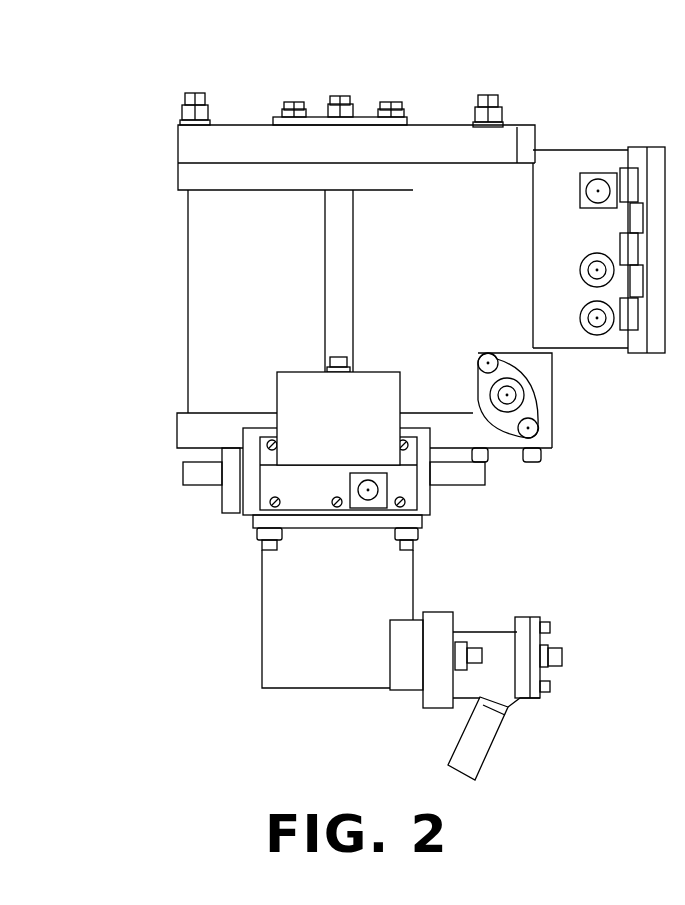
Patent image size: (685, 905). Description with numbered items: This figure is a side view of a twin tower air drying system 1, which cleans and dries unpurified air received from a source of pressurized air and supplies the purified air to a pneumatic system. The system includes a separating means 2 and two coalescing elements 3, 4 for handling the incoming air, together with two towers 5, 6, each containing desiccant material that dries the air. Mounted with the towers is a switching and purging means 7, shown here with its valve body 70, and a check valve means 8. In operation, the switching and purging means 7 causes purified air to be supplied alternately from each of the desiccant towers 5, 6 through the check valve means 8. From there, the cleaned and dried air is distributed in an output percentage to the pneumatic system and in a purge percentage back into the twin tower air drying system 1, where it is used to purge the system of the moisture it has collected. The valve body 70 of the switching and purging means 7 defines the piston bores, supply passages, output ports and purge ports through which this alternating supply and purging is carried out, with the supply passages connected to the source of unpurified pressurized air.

The twin tower air drying system 1 is at (198, 65).
The separating means 2 is at (322, 518).
The coalescing element 3 is at (190, 429).
The coalescing element 4 is at (472, 432).
The tower 5 is at (197, 244).
The tower 6 is at (500, 197).
The switching and purging means 7 is at (273, 457).
The check valve means 8 is at (360, 120).
The valve body 70 is at (332, 448).